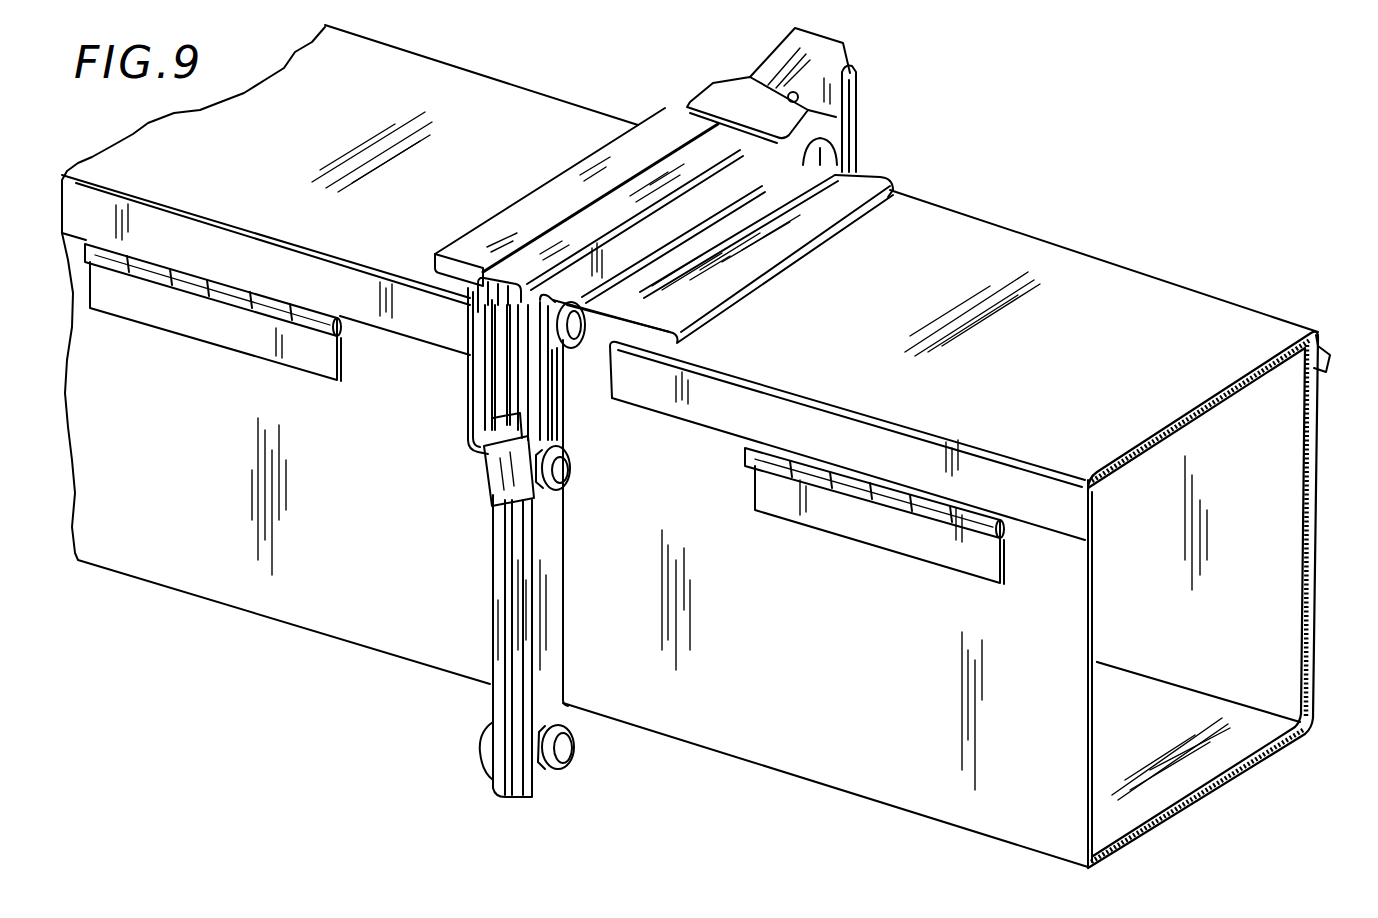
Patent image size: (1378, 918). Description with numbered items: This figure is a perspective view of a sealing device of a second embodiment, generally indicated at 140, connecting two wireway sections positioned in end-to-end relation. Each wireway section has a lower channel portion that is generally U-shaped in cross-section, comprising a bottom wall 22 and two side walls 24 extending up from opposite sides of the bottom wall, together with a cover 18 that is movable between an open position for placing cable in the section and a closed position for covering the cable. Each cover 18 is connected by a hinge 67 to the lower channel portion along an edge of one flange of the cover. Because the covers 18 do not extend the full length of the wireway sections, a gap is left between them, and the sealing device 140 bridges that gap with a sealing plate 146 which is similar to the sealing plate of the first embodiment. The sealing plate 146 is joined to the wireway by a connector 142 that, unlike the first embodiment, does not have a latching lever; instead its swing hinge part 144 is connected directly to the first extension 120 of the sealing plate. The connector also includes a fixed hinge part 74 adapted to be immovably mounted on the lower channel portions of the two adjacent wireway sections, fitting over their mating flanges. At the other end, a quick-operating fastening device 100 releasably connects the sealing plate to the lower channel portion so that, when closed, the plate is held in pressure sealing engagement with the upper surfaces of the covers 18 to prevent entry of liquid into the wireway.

The cover 18 is at (487, 95).
The bottom wall 22 is at (1177, 773).
The side wall 24 is at (240, 573).
The hinge 67 is at (252, 330).
The fixed hinge part 74 is at (510, 487).
The quick-operating fastening device 100 is at (687, 407).
The first extension 120 is at (515, 237).
The sealing device of second embodiment 140 is at (640, 150).
The connector 142 is at (467, 392).
The swing hinge part 144 is at (552, 402).
The sealing plate 146 is at (856, 184).